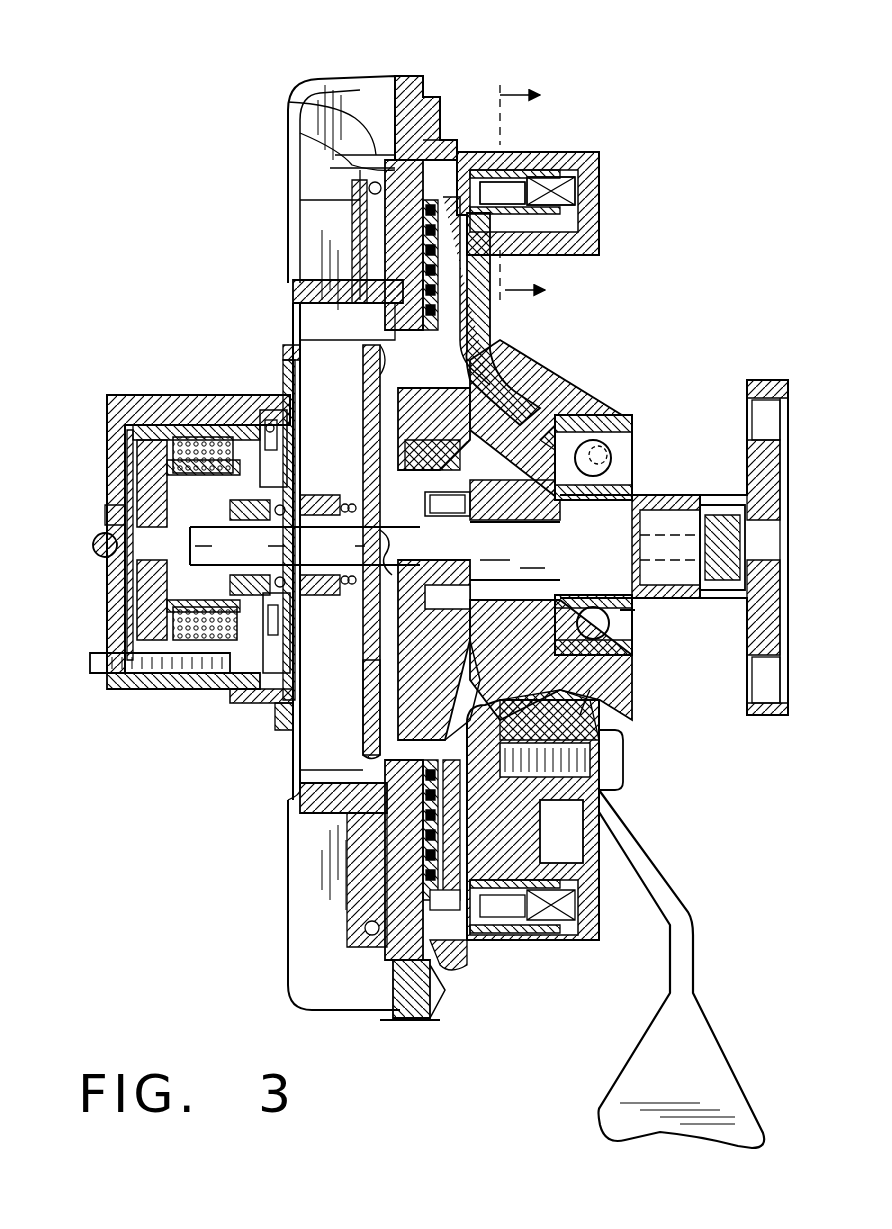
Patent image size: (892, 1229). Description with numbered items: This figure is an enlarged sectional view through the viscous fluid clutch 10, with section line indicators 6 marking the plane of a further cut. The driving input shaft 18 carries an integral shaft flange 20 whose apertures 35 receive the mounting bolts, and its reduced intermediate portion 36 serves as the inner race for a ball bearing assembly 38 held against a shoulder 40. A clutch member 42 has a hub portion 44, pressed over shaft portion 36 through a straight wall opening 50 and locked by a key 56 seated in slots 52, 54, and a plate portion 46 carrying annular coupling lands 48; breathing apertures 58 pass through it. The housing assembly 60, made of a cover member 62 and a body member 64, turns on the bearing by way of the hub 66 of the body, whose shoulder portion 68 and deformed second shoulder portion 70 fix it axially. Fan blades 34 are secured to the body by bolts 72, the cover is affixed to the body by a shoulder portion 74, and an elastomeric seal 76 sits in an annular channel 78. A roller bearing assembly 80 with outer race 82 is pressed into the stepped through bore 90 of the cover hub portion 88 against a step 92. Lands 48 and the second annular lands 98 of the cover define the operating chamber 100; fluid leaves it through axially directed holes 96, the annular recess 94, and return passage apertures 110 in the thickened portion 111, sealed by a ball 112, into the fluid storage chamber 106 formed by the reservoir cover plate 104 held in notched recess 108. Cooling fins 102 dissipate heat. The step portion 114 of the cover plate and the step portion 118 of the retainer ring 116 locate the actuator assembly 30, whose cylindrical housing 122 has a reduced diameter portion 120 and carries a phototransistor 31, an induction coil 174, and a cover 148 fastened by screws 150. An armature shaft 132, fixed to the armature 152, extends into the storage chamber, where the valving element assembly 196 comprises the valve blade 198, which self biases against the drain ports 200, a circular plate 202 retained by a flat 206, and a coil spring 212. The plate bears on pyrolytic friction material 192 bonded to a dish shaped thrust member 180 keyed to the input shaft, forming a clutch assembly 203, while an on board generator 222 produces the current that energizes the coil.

The section line 6- 6 is at (536, 193).
The viscous fluid clutch 10 is at (605, 148).
The input shaft 18 is at (700, 580).
The shaft flange 20 is at (760, 378).
The actuator assembly 30 is at (100, 403).
The phototransistor 31 is at (93, 547).
The fan blades 34 is at (640, 1092).
The apertures 35 is at (778, 418).
The reduced intermediate portion 36 is at (700, 546).
The ball bearing assembly 38 is at (625, 612).
The shoulder 40 is at (632, 505).
The clutch member 42 is at (475, 830).
The hub portion 44 is at (612, 578).
The plate portion 46 is at (490, 240).
The annular coupling lands 48 is at (498, 268).
The straight wall opening 50 is at (495, 505).
The slot 52 is at (459, 690).
The slot 54 is at (605, 670).
The key 56 is at (549, 715).
The breathing apertures 58 is at (545, 741).
The housing assembly 60 is at (395, 70).
The cover member 62 is at (348, 78).
The body member 64 is at (440, 125).
The hub 66 is at (620, 430).
The shoulder portion 68 is at (630, 640).
The second shoulder portion 70 is at (590, 700).
The bolts 72 is at (615, 758).
The shoulder portion 74 is at (450, 998).
The elastomeric seal 76 is at (445, 948).
The annular channel 78 is at (420, 950).
The roller bearing assembly 80 is at (500, 400).
The outer race 82 is at (439, 641).
The hub portion 88 is at (580, 420).
The stepped through bore 90 is at (470, 512).
The step 92 is at (432, 470).
The annular recess 94 is at (400, 905).
The axially directed holes 96 is at (380, 190).
The annular lands 98 is at (410, 226).
The operating chamber 100 is at (395, 211).
The cooling fins 102 is at (300, 880).
The reservoir cover plate 104 is at (300, 300).
The fluid storage chamber 106 is at (360, 328).
The annular notched recess 108 is at (300, 830).
The return passage apertures 110 is at (350, 262).
The thickened portion 111 is at (300, 134).
The ball 112 is at (292, 101).
The step portion 114 is at (306, 633).
The retainer ring 116 is at (280, 725).
The step portion 118 is at (245, 700).
The reduced diameter portion 120 is at (311, 523).
The housing 122 is at (192, 398).
The armature shaft 132 is at (305, 546).
The cover 148 is at (107, 515).
The screws 150 is at (92, 665).
The armature 152 is at (107, 570).
The induction coil 174 is at (175, 690).
The thrust member 180 is at (412, 432).
The friction material 192 is at (372, 676).
The valving element assembly 196 is at (355, 462).
The valve blade 198 is at (290, 770).
The drain ports 200 is at (478, 322).
The circular plate 202 is at (290, 342).
The clutch assembly 203 is at (480, 357).
The flat 206 is at (364, 545).
The coil spring 212 is at (289, 366).
The on board generator 222 is at (540, 962).